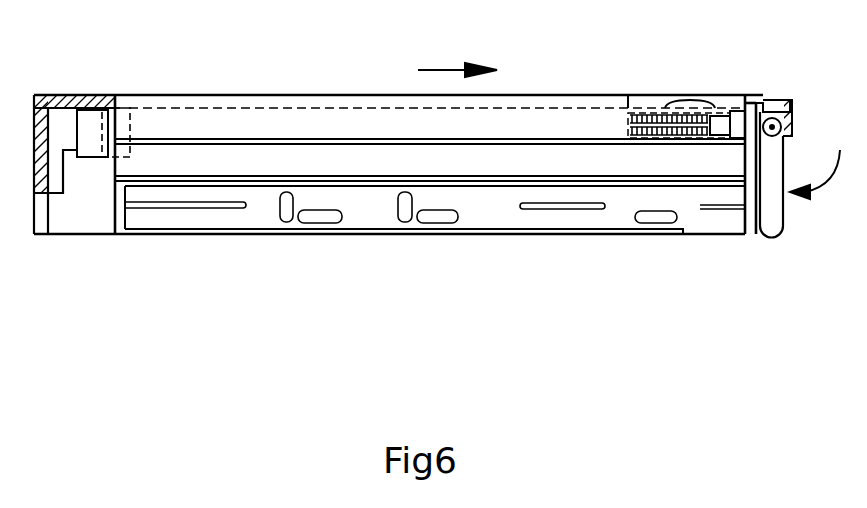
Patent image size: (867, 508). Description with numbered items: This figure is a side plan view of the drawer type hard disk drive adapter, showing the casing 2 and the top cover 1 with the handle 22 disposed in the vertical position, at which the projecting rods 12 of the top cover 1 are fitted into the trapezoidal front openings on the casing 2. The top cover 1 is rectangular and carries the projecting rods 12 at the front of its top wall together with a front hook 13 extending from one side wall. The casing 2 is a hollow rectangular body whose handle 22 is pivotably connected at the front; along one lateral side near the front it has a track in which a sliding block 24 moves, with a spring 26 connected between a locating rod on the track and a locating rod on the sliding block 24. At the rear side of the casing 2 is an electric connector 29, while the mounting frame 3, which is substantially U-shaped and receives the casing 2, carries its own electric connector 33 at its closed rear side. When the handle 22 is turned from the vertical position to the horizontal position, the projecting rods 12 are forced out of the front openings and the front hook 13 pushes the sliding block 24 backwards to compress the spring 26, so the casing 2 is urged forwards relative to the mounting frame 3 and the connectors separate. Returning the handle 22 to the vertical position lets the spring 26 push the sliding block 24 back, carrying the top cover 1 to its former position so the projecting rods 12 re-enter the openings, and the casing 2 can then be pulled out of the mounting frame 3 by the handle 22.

The top cover 1 is at (348, 95).
The casing 2 is at (487, 229).
The mounting frame 3 is at (42, 234).
The projecting rods 12 is at (762, 105).
The front hook 13 is at (742, 113).
The handle 22 is at (778, 232).
The sliding block 24 is at (722, 112).
The spring 26 is at (658, 112).
The electric connector 29 is at (112, 123).
The electric connector 33 is at (88, 157).